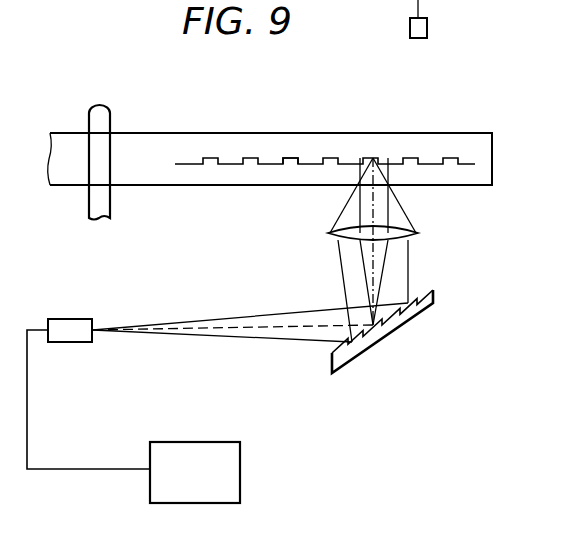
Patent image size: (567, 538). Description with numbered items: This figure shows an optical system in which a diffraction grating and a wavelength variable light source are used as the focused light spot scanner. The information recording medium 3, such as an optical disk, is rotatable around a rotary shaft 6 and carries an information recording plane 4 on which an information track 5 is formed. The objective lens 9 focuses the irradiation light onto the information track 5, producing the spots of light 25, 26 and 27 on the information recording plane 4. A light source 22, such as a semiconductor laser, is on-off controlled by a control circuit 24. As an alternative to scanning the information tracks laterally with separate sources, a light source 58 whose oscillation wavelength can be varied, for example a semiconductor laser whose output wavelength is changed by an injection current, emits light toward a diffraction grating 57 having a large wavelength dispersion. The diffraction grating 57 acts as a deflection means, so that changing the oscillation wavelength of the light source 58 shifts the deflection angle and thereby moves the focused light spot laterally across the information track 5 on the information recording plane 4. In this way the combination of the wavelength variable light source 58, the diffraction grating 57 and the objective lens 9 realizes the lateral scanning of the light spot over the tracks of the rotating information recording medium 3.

The information recording medium 3 is at (158, 133).
The information recording plane 4 is at (227, 165).
The information track 5 is at (293, 157).
The rotary shaft 6 is at (106, 105).
The objective lens 9 is at (420, 237).
The light source 22 is at (428, 30).
The control circuit 24 is at (241, 494).
The light spot 25 is at (384, 160).
The light spot 26 is at (373, 157).
The light spot 27 is at (364, 158).
The diffraction grating 57 is at (436, 296).
The wavelength variable light source 58 is at (88, 343).